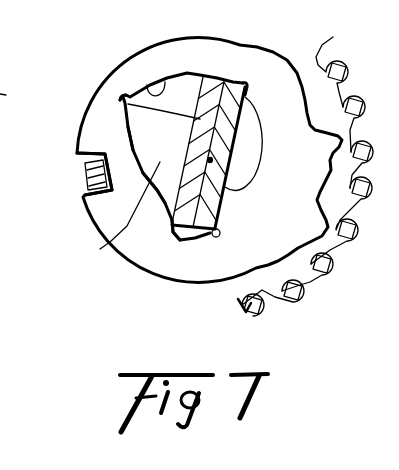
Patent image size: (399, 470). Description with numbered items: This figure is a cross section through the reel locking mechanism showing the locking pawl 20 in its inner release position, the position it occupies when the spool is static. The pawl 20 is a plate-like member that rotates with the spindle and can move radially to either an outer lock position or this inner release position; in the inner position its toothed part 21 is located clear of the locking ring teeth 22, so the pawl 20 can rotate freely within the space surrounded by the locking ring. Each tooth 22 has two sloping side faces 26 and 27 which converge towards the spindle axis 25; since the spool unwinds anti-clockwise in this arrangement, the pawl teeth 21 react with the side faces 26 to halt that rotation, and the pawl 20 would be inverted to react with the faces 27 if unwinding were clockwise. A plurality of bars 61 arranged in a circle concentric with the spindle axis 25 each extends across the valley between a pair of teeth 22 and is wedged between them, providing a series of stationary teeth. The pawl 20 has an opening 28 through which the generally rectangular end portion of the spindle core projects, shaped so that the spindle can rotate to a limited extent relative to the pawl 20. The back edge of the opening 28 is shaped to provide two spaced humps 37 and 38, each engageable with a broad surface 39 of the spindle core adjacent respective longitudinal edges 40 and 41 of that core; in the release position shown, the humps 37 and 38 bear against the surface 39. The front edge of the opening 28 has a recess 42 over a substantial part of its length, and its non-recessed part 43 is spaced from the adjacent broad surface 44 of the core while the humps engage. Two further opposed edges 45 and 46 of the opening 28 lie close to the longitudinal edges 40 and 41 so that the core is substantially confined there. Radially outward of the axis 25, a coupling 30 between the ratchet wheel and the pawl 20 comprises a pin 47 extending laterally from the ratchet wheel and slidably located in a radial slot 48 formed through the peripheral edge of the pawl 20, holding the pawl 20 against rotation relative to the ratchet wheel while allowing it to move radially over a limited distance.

The locking pawl 20 is at (167, 64).
The longitudinal edge of spindle core 40 is at (188, 72).
The hump 38 is at (250, 107).
The spindle axis 25 is at (210, 159).
The opposed edge of opening 46 is at (207, 235).
The longitudinal edge of spindle core 41 is at (176, 238).
The broad surface of spindle core 39 is at (267, 172).
The opposed edge of opening 45 is at (147, 88).
The broad surface of spindle core 44 is at (127, 97).
The recess 42 is at (132, 138).
The non-recessed part 43 is at (158, 203).
The opening 28 is at (119, 215).
The coupling 30 is at (82, 189).
The radial slot 48 is at (85, 167).
The pin 47 is at (86, 182).
The sloping side face 27 is at (338, 67).
The locking ring teeth 22 is at (343, 87).
The sloping side face 26 is at (357, 125).
The toothed part 21 is at (350, 205).
The bars 61 is at (336, 260).
The hump 37 is at (225, 208).